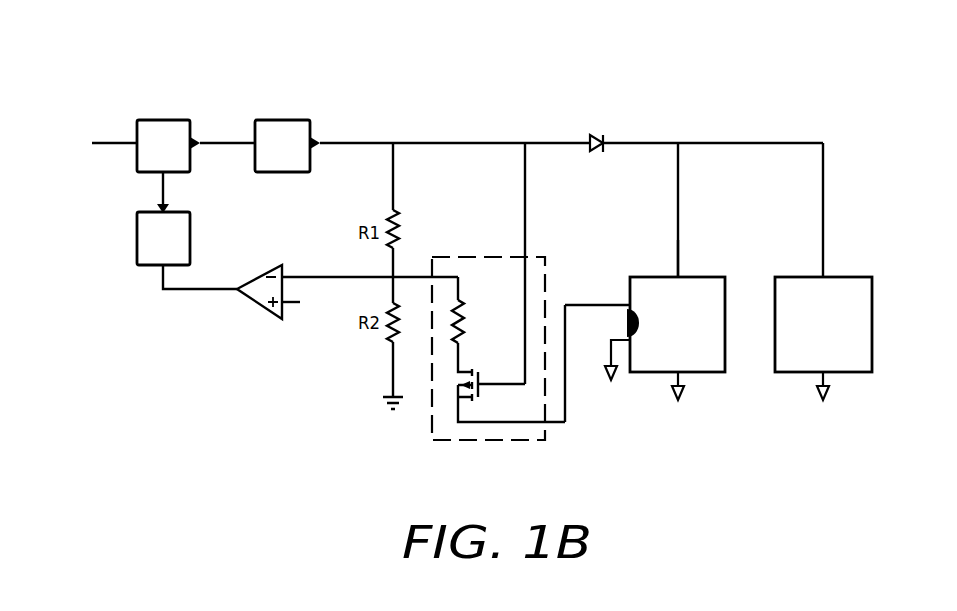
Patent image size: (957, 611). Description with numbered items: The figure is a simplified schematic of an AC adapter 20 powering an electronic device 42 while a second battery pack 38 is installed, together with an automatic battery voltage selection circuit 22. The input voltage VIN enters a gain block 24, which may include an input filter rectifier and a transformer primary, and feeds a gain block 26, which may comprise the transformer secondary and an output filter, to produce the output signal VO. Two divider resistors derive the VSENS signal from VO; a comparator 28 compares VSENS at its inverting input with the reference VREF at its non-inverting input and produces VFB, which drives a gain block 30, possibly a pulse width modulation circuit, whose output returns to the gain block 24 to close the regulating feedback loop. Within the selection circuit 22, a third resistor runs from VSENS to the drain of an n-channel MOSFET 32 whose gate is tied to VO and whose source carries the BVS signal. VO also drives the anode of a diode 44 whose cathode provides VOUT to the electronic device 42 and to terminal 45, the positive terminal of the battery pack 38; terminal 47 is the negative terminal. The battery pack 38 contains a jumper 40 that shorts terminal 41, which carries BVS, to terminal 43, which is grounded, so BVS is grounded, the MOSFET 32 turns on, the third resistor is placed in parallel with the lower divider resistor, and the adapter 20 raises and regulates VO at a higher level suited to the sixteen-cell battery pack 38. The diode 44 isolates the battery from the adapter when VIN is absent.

The AC adapter 20 is at (480, 103).
The gain block 24 is at (154, 118).
The gain block 26 is at (272, 118).
The gain block 30 is at (144, 210).
The comparator 28 is at (254, 276).
The automatic battery voltage selection circuit 22 is at (484, 251).
The n-channel MOSFET 32 is at (481, 379).
The diode 44 is at (598, 137).
The battery pack 38 is at (652, 277).
The terminal 45 is at (677, 277).
The terminal 41 is at (630, 306).
The jumper 40 is at (627, 321).
The terminal 43 is at (628, 343).
The terminal 47 is at (683, 380).
The electronic device 42 is at (848, 277).